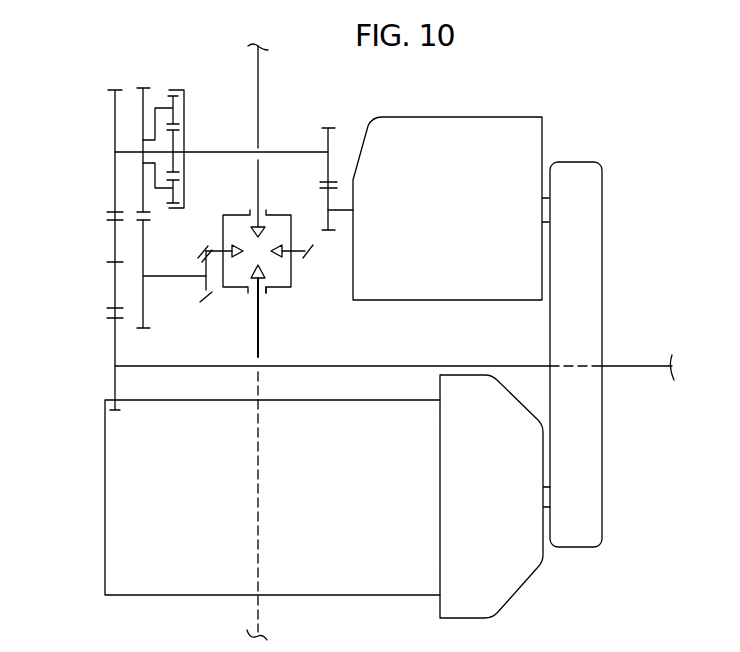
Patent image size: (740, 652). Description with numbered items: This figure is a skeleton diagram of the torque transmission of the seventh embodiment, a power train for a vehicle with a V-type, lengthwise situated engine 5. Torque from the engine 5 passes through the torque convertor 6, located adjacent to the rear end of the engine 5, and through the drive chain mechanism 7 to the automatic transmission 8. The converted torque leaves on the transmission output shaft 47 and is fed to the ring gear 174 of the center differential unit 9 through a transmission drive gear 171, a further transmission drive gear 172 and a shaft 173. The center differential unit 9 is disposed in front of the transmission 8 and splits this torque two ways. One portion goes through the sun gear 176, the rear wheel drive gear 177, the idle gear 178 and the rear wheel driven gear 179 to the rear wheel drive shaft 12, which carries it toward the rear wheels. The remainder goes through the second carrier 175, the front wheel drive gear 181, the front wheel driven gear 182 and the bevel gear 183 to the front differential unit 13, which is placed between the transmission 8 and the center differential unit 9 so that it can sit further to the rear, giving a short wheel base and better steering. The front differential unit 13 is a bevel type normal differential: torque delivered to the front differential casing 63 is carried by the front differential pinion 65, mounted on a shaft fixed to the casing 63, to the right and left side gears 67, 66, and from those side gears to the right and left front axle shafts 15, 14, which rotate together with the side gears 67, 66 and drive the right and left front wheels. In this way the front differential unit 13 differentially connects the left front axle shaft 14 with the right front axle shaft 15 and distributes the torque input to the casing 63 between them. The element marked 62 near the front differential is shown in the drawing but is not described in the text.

The engine 5 is at (105, 595).
The torque convertor 6 is at (517, 597).
The drive chain mechanism 7 is at (602, 285).
The automatic transmission 8 is at (542, 117).
The center differential unit 9 is at (128, 74).
The rear wheel drive shaft 12 is at (633, 370).
The front differential unit 13 is at (304, 300).
The left front axle shaft 14 is at (258, 607).
The right front axle shaft 15 is at (258, 85).
The transmission output shaft 47 is at (352, 200).
The valve port 62 is at (305, 251).
The front differential casing 63 is at (275, 292).
The front differential pinion 65 is at (210, 305).
The left side gear 66 is at (235, 257).
The right side gear 67 is at (272, 228).
The transmission drive gear 171 is at (328, 230).
The transmission drive gear 172 is at (328, 128).
The shaft 173 is at (215, 150).
The ring gear 174 is at (178, 89).
The second carrier 175 is at (167, 200).
The sun gear 176 is at (160, 145).
The rear wheel drive gear 177 is at (110, 208).
The idle gear 178 is at (110, 305).
The rear wheel driven gear 179 is at (110, 322).
The front wheel drive gear 181 is at (147, 87).
The front wheel driven gear 182 is at (143, 330).
The bevel gear 183 is at (253, 273).